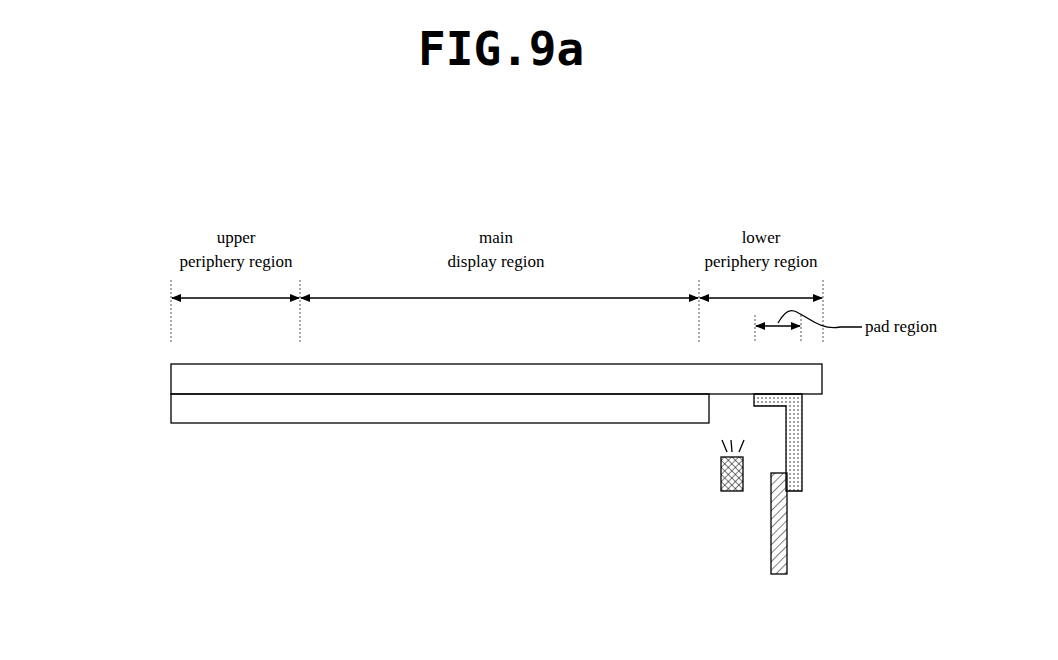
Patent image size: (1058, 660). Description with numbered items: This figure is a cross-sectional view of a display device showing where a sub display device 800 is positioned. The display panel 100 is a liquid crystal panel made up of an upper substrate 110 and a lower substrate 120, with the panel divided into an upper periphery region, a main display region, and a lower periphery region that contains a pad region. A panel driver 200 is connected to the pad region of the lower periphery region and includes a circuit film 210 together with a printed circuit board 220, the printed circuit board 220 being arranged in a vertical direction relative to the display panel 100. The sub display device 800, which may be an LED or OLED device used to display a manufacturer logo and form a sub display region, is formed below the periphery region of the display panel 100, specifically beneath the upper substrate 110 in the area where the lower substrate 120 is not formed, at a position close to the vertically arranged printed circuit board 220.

The display panel 100 is at (432, 393).
The upper substrate 110 is at (177, 375).
The lower substrate 120 is at (177, 410).
The panel driver 200 is at (842, 484).
The circuit film 210 is at (802, 442).
The printed circuit board 220 is at (824, 523).
The sub display device 800 is at (733, 492).